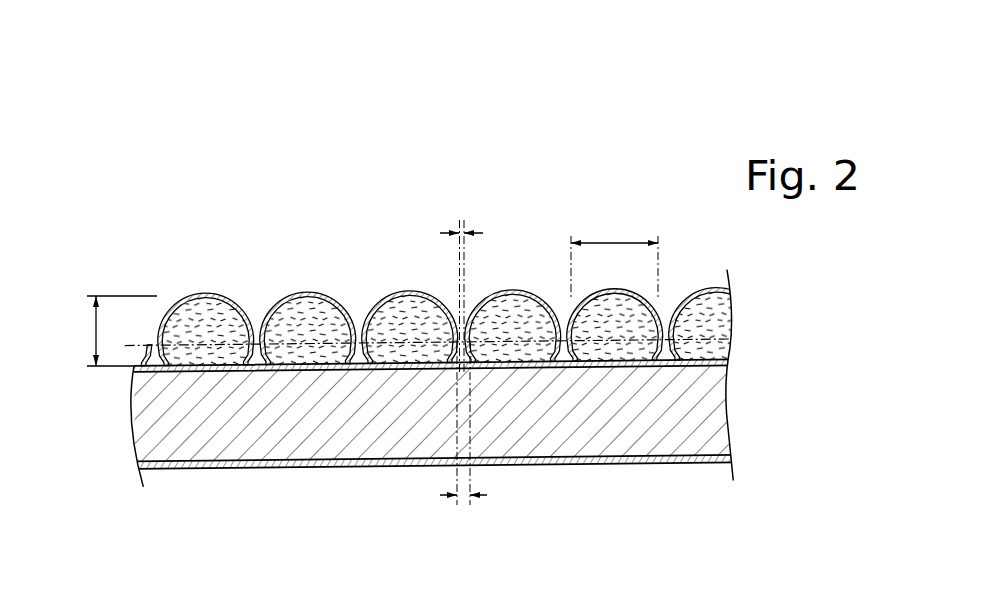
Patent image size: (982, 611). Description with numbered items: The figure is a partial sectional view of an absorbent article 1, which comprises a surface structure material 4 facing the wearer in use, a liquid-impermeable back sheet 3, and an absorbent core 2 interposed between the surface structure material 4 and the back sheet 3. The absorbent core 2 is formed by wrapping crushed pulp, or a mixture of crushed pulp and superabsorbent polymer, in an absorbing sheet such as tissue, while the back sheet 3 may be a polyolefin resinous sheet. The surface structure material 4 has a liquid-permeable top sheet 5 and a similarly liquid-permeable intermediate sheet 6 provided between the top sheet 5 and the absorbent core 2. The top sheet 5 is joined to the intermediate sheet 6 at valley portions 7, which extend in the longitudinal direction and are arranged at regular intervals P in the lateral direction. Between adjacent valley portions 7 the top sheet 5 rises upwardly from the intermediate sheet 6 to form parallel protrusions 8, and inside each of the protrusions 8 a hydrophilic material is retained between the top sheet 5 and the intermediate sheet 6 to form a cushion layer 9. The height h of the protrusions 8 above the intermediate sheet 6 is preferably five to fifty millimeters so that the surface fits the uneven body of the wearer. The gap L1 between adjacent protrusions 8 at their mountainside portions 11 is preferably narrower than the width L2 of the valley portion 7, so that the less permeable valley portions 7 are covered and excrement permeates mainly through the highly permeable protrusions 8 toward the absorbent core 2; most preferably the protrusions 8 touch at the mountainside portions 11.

The absorbent article 1 is at (182, 484).
The absorbent core 2 is at (683, 413).
The back sheet 3 is at (567, 464).
The surface structure material 4 is at (742, 288).
The top sheet 5 is at (213, 293).
The intermediate sheet 6 is at (187, 372).
The valley portions 7 is at (300, 462).
The protrusions 8 is at (410, 283).
The cushion layer 9 is at (369, 296).
The mountainside portions 11 is at (137, 346).
The height of the protrusions h is at (112, 331).
The regular intervals P is at (617, 243).
The gap between adjacent protrusions L1 is at (462, 222).
The width of the valley portion L2 is at (470, 505).